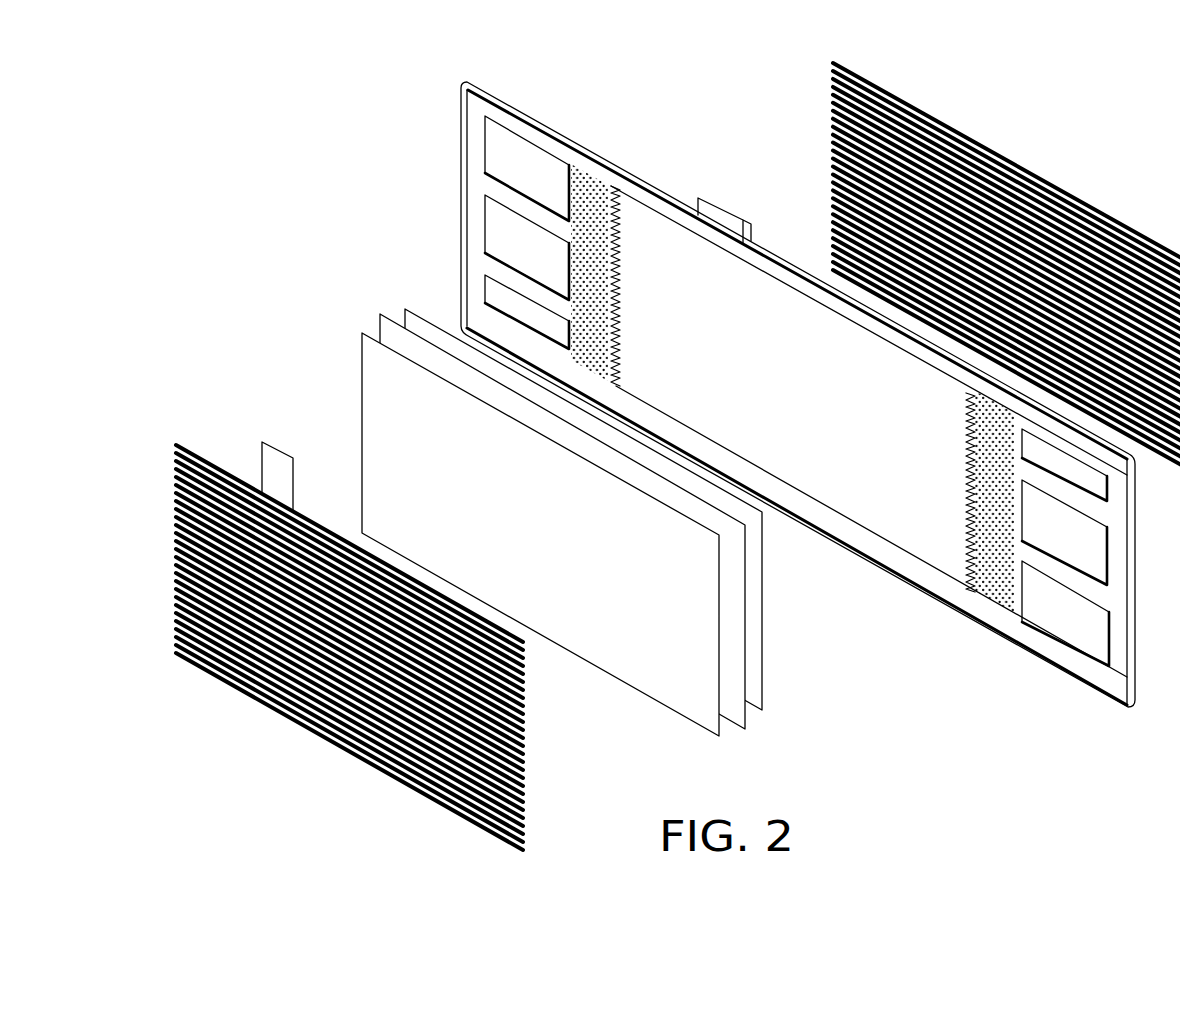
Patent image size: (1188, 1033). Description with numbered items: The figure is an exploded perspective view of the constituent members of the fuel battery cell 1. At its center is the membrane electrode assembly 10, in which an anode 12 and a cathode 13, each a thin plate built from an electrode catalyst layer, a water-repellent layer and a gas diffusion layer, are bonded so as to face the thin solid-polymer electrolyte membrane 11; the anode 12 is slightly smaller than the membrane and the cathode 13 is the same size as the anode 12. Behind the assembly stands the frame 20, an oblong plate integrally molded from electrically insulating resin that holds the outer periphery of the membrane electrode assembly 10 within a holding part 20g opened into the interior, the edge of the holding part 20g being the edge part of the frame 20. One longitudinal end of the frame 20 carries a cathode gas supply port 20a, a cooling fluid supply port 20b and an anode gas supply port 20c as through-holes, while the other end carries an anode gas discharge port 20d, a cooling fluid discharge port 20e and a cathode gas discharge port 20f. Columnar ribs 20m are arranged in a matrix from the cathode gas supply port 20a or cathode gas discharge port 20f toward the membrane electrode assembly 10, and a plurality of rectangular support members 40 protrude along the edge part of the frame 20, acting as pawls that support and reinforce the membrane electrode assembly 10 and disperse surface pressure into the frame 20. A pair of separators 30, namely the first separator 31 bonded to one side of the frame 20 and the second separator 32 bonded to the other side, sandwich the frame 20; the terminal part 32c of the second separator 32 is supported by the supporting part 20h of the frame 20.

The fuel battery cell 1 is at (160, 75).
The membrane electrode assembly 10 is at (592, 547).
The electrolyte membrane 11 is at (738, 722).
The anode 12 is at (755, 705).
The cathode 13 is at (712, 728).
The frame 20 is at (652, 184).
The cathode gas supply port 20a is at (478, 137).
The cooling fluid supply port 20b is at (478, 216).
The anode gas supply port 20c is at (478, 284).
The anode gas discharge port 20d is at (1099, 478).
The cooling fluid discharge port 20e is at (1099, 550).
The cathode gas discharge port 20f is at (1099, 631).
The holding part 20g is at (747, 252).
The supporting part 20h is at (722, 204).
The ribs 20m is at (597, 177).
The separators 30 is at (678, 456).
The first separator 31 is at (1007, 152).
The second separator 32 is at (340, 743).
The terminal part 32c is at (256, 443).
The support members 40 is at (610, 185).